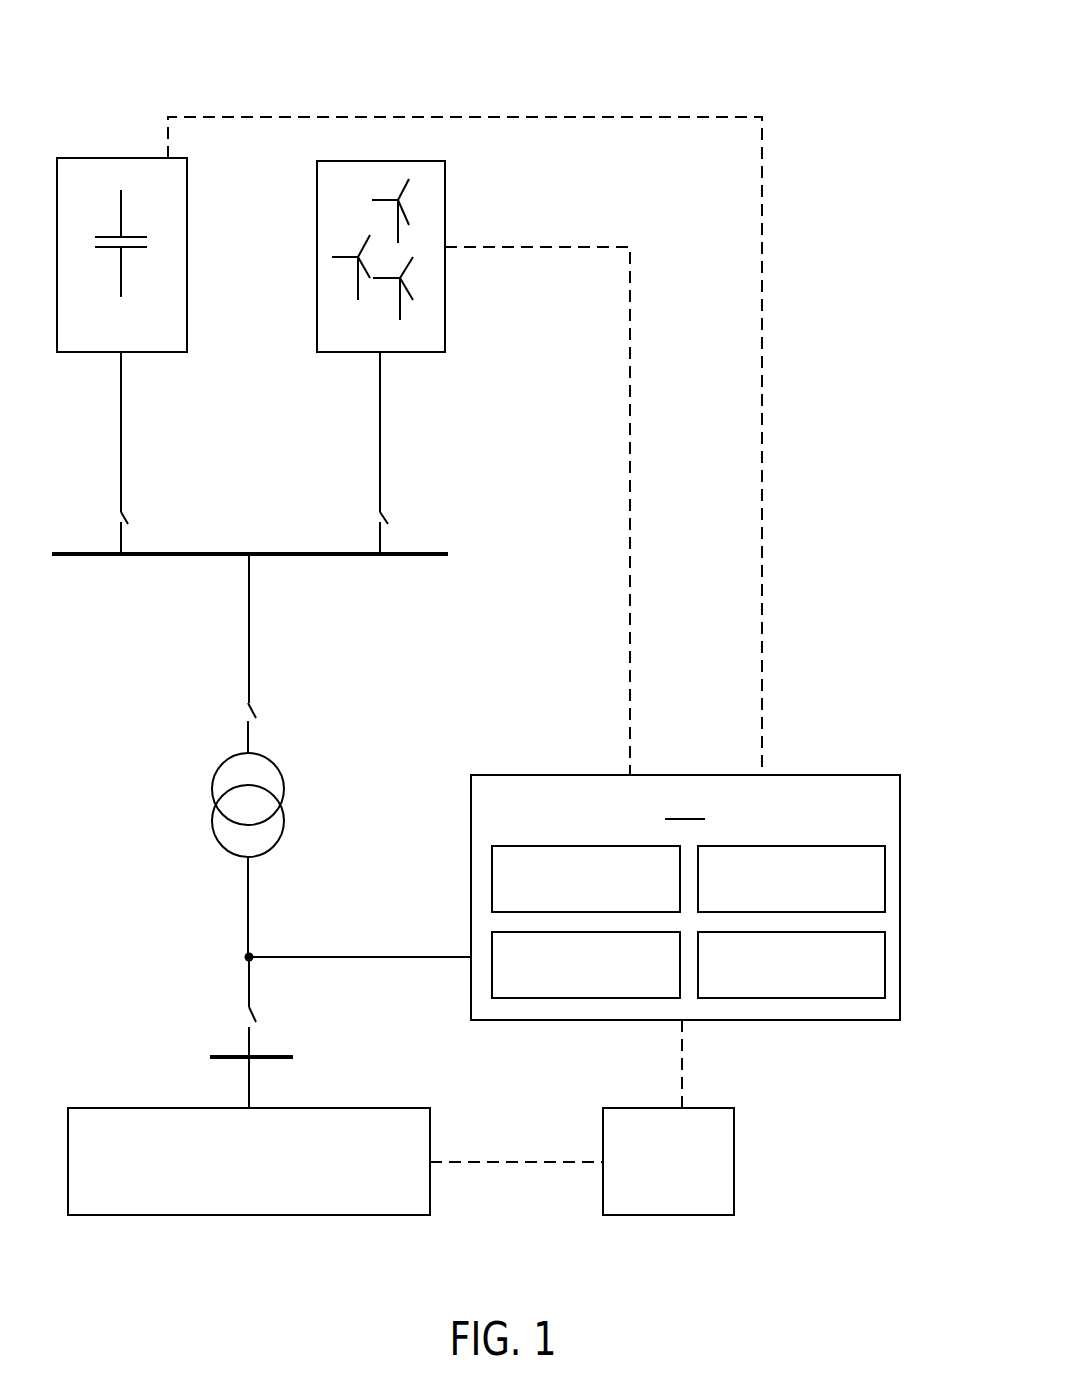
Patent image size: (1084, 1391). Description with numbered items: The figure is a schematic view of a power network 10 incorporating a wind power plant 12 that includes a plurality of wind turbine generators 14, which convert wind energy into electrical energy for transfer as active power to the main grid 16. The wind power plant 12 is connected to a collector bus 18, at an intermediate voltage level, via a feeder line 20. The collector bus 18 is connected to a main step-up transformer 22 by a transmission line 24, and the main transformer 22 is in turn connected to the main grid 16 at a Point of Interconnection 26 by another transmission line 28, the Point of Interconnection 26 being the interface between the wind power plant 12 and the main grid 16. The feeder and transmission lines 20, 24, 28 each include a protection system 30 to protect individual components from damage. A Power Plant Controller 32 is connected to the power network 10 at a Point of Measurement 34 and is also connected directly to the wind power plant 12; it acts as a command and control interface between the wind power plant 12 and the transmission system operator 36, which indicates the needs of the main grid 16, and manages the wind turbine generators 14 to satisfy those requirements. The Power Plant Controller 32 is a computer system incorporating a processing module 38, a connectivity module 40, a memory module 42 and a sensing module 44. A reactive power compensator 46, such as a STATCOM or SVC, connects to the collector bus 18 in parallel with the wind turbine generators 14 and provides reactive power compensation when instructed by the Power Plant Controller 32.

The power network 10 is at (493, 390).
The wind power plant 12 is at (385, 253).
The wind turbine generators 14 is at (337, 237).
The main grid 16 is at (249, 1125).
The collector bus 18 is at (262, 518).
The feeder line 20 is at (413, 432).
The main step-up transformer 22 is at (276, 797).
The transmission line 24 is at (281, 628).
The Point of Interconnection 26 is at (279, 1041).
The transmission line 28 is at (280, 907).
The protection system 30 is at (353, 769).
The Power Plant Controller 32 is at (688, 862).
The Point of Measurement 34 is at (316, 966).
The transmission system operator 36 is at (700, 1161).
The processing module 38 is at (554, 879).
The connectivity module 40 is at (823, 879).
The memory module 42 is at (554, 954).
The sensing module 44 is at (823, 965).
The reactive power compensator 46 is at (122, 320).